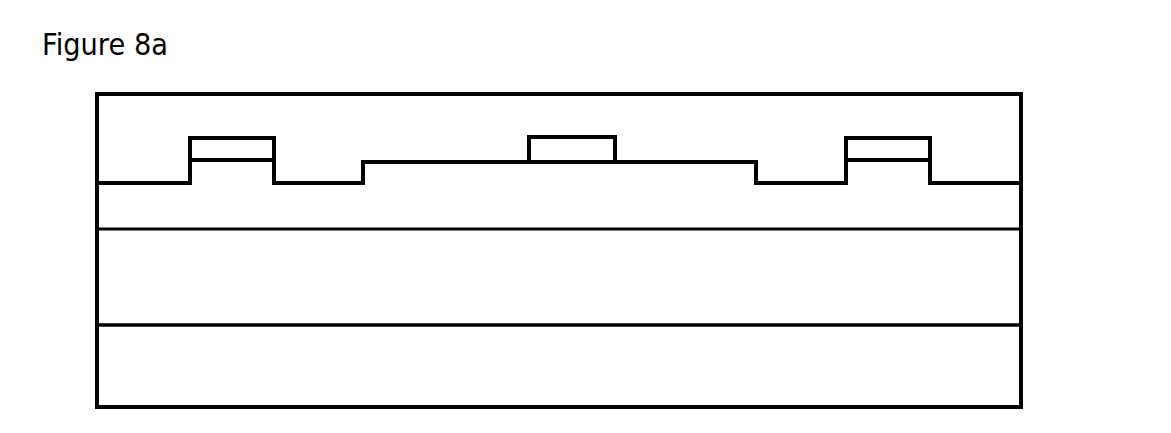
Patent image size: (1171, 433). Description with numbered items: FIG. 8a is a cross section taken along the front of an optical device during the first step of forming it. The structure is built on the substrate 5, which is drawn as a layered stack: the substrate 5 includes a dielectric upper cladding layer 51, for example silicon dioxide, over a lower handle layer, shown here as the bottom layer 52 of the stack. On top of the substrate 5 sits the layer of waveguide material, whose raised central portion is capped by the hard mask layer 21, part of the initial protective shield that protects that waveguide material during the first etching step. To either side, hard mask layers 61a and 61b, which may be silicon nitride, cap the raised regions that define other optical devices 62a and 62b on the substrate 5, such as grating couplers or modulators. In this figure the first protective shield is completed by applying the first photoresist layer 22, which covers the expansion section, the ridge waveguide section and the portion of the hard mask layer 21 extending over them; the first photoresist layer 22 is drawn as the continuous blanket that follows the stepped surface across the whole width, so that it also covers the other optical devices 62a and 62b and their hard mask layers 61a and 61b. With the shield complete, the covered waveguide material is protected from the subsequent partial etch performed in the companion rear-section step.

The substrate 5 is at (1100, 162).
The hard mask layer 21 is at (569, 146).
The first photoresist layer 22 is at (693, 118).
The dielectric upper cladding layer 51 is at (559, 277).
The second substrate layer 52 is at (559, 366).
The hard mask layer 61a is at (235, 146).
The hard mask layer 61b is at (903, 147).
The other optical device 62a is at (275, 174).
The other optical device 62b is at (921, 176).